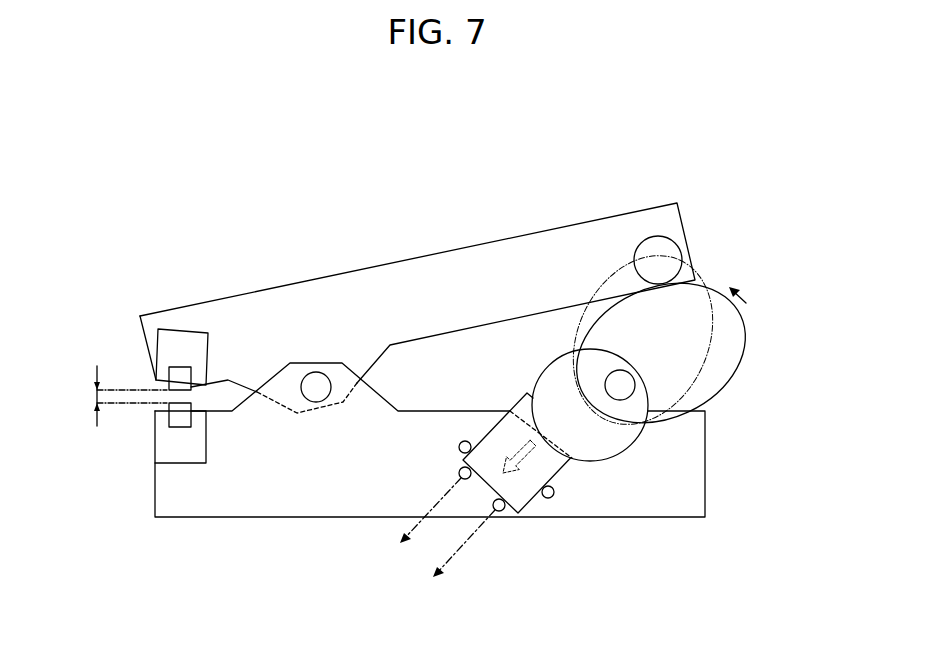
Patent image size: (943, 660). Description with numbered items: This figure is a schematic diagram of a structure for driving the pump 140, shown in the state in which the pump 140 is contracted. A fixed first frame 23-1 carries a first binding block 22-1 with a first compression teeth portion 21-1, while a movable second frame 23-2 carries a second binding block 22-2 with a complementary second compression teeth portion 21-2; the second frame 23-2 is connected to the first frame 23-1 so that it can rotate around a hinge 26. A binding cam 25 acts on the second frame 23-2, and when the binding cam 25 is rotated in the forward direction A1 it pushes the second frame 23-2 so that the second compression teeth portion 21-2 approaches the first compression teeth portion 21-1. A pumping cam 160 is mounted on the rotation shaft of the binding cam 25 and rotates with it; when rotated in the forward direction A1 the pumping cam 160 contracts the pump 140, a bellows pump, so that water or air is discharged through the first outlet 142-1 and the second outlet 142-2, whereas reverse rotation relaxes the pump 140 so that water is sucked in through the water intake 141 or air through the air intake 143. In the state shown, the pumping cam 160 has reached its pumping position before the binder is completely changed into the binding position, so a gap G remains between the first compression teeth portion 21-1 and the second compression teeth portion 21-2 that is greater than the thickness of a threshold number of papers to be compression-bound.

The second frame 23-2 is at (273, 262).
The second binding block 22-2 is at (186, 342).
The second compression teeth portion 21-2 is at (178, 367).
The first compression teeth portion 21-1 is at (178, 427).
The gap G is at (93, 397).
The first binding block 22-1 is at (181, 455).
The first frame 23-1 is at (285, 542).
The hinge 26 is at (318, 372).
The pump 140 is at (557, 474).
The pumping cam 160 is at (547, 372).
The air intake 143 is at (465, 441).
The second outlet 142-2 is at (458, 472).
The first outlet 142-1 is at (502, 512).
The water intake 141 is at (552, 500).
The binding cam 25 is at (743, 340).
The forward direction A1 is at (742, 297).